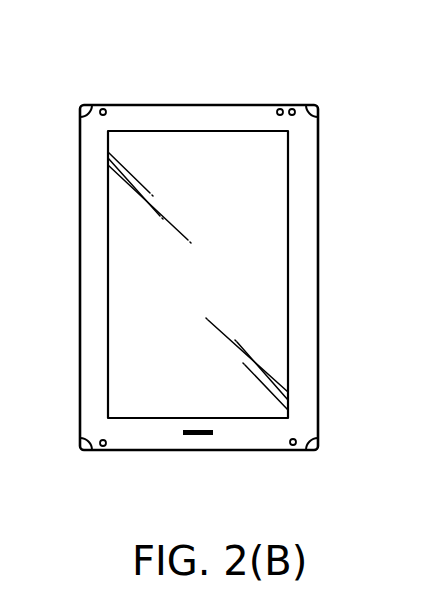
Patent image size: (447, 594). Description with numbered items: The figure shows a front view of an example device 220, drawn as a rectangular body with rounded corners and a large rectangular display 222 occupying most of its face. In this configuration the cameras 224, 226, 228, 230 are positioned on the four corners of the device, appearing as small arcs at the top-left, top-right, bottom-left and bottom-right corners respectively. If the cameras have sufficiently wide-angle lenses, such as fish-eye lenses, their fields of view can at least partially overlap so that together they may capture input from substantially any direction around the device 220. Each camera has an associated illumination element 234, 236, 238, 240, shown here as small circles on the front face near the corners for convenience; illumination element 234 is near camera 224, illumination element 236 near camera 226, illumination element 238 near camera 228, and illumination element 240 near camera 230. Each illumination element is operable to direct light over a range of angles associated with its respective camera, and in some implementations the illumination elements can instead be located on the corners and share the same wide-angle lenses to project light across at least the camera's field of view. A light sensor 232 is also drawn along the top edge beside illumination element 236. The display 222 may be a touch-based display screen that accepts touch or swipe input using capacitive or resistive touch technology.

The device 220 is at (383, 107).
The display 222 is at (108, 141).
The camera 224 is at (87, 108).
The camera 226 is at (308, 107).
The camera 228 is at (83, 450).
The camera 230 is at (308, 450).
The light sensor 232 is at (277, 109).
The illumination element 234 is at (105, 110).
The illumination element 236 is at (292, 108).
The illumination element 238 is at (105, 447).
The illumination element 240 is at (292, 446).